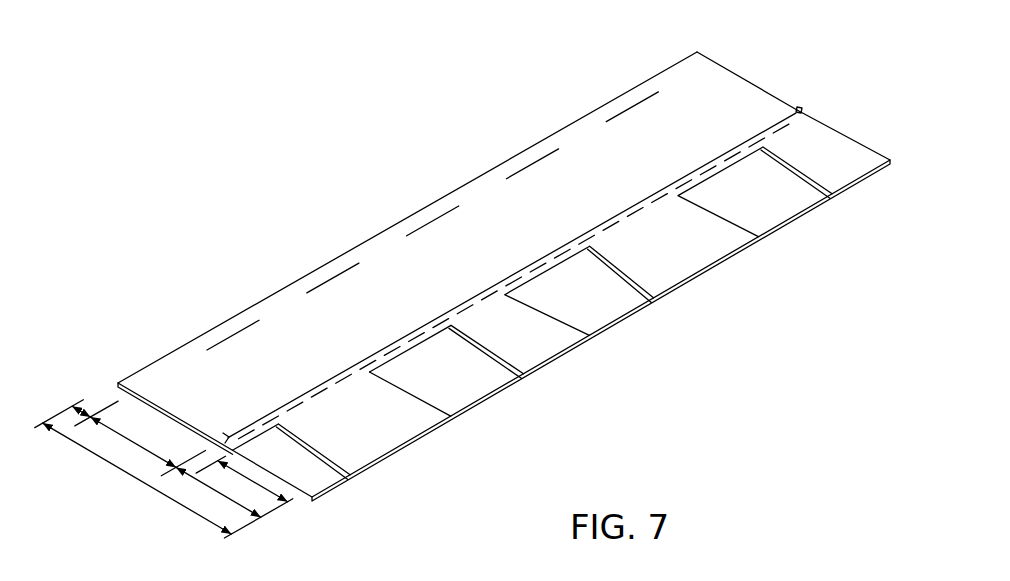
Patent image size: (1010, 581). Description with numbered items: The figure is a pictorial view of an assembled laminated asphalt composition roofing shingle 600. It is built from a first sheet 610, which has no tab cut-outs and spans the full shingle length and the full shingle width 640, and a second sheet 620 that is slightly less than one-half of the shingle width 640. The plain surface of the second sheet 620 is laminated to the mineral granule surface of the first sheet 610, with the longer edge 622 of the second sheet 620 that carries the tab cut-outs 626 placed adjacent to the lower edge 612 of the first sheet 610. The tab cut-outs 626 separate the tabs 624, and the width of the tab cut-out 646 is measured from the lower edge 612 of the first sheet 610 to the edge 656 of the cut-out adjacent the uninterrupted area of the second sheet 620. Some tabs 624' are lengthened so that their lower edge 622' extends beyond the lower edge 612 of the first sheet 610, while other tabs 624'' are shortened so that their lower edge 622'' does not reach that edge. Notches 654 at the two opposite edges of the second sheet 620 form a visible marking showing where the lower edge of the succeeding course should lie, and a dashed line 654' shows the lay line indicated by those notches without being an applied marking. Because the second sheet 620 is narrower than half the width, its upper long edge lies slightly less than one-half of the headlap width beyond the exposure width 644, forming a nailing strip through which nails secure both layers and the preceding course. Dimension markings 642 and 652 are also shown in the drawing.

The laminated asphalt composition roofing shingle 600 is at (889, 70).
The first sheet 610 is at (740, 75).
The lower edge of the first sheet 612 is at (460, 408).
The second sheet 620 is at (832, 125).
The longer edge of the second sheet 622 is at (400, 459).
The lower edge of lengthened tab 622' is at (563, 376).
The lower edge of shortened tab 622'' is at (711, 272).
The tab 624 is at (568, 304).
The lengthened tab 624' is at (579, 293).
The shortened tab 624'' is at (755, 192).
The tab cut-out 626 is at (325, 485).
The full shingle width 640 is at (203, 517).
The headlap offset dimension 642 is at (79, 409).
The exposure width 644 is at (143, 448).
The width of the tab cut-out 646 is at (258, 484).
The nail line 652 is at (163, 377).
The notches 654 is at (503, 251).
The dashed line 654' is at (516, 280).
The edge of the tab cut-out 656 is at (408, 343).